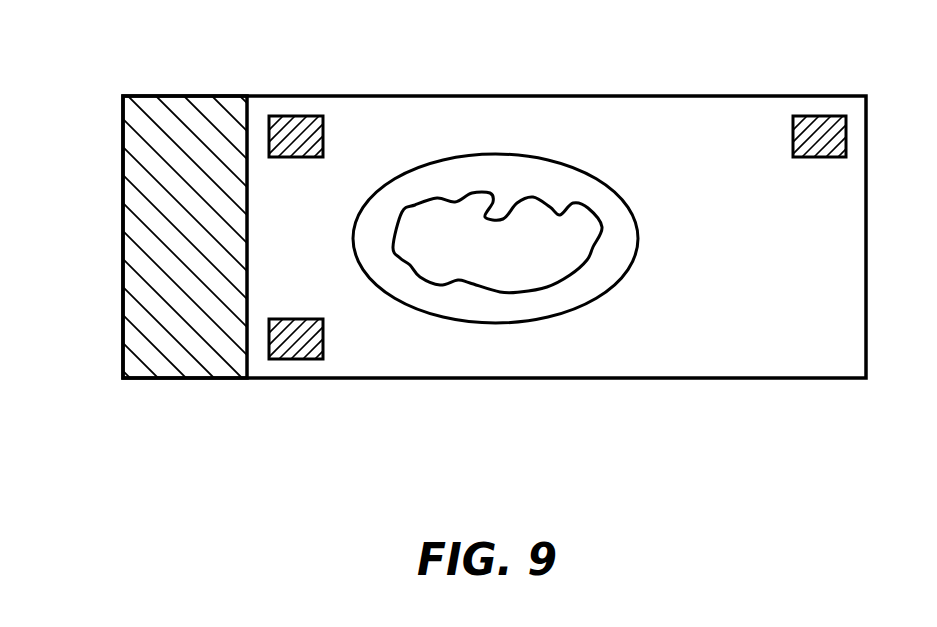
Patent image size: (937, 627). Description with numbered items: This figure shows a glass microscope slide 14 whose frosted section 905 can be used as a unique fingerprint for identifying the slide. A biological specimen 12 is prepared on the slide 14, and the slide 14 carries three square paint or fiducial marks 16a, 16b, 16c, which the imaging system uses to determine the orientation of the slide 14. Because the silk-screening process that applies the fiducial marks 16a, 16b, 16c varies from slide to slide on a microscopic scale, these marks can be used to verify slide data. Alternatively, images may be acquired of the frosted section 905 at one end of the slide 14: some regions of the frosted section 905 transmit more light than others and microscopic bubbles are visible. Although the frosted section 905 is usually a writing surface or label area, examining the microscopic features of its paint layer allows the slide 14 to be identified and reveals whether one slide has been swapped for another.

The biological specimen 12 is at (464, 222).
The glass microscope slide 14 is at (818, 343).
The fiducial mark 16a is at (293, 116).
The fiducial mark 16b is at (300, 358).
The fiducial mark 16c is at (819, 115).
The frosted section 905 is at (167, 252).